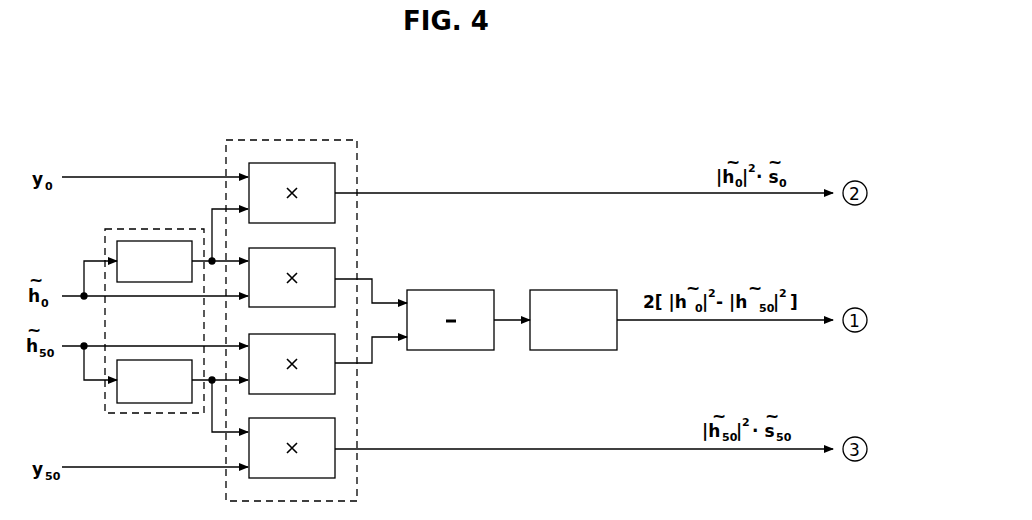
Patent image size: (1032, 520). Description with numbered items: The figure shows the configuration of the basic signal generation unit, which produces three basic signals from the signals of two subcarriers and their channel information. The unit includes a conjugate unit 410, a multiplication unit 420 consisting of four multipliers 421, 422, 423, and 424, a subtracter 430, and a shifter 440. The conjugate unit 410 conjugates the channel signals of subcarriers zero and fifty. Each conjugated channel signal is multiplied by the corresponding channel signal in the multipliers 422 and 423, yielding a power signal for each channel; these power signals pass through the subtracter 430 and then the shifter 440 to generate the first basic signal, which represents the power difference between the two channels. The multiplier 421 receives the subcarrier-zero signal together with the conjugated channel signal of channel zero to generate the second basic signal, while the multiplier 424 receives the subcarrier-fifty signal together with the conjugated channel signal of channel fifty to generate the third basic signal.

The conjugate unit 410 is at (153, 228).
The multiplication unit 420 is at (292, 140).
The multiplier 421 is at (335, 163).
The multiplier 422 is at (335, 249).
The multiplier 423 is at (335, 393).
The multiplier 424 is at (335, 478).
The subtracter 430 is at (452, 290).
The shifter 440 is at (575, 290).